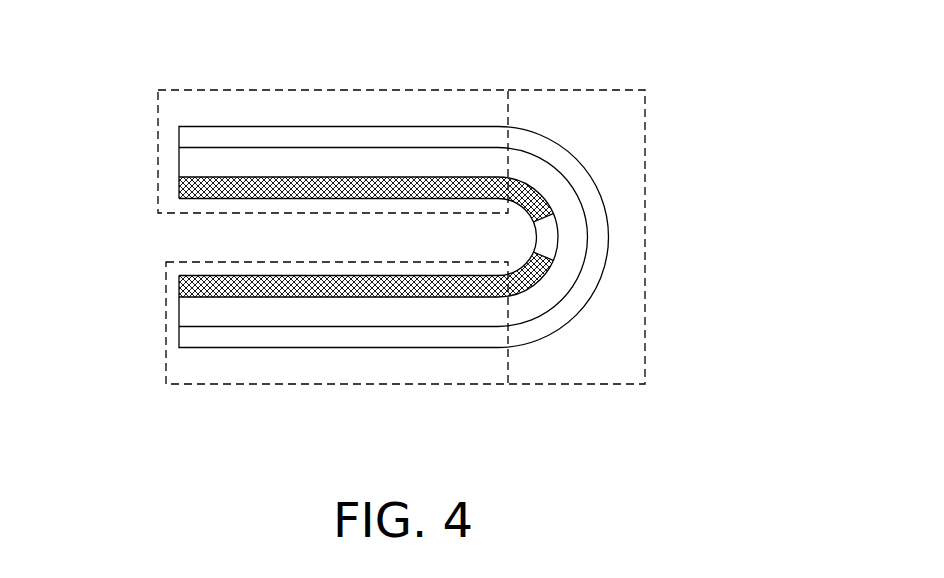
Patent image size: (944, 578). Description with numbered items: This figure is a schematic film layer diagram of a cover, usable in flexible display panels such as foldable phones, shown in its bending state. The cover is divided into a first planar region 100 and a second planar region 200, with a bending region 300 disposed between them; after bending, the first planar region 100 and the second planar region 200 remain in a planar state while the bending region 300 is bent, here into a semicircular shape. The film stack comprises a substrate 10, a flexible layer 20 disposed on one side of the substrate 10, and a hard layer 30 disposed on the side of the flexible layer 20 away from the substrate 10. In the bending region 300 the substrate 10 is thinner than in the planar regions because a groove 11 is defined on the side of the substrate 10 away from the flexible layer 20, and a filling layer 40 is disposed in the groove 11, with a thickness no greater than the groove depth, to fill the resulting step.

The substrate 10 is at (190, 191).
The groove 11 is at (553, 215).
The flexible layer 20 is at (190, 157).
The hard layer 30 is at (195, 342).
The filling layer 40 is at (548, 242).
The first planar region 100 is at (165, 97).
The second planar region 200 is at (175, 375).
The bending region 300 is at (620, 347).